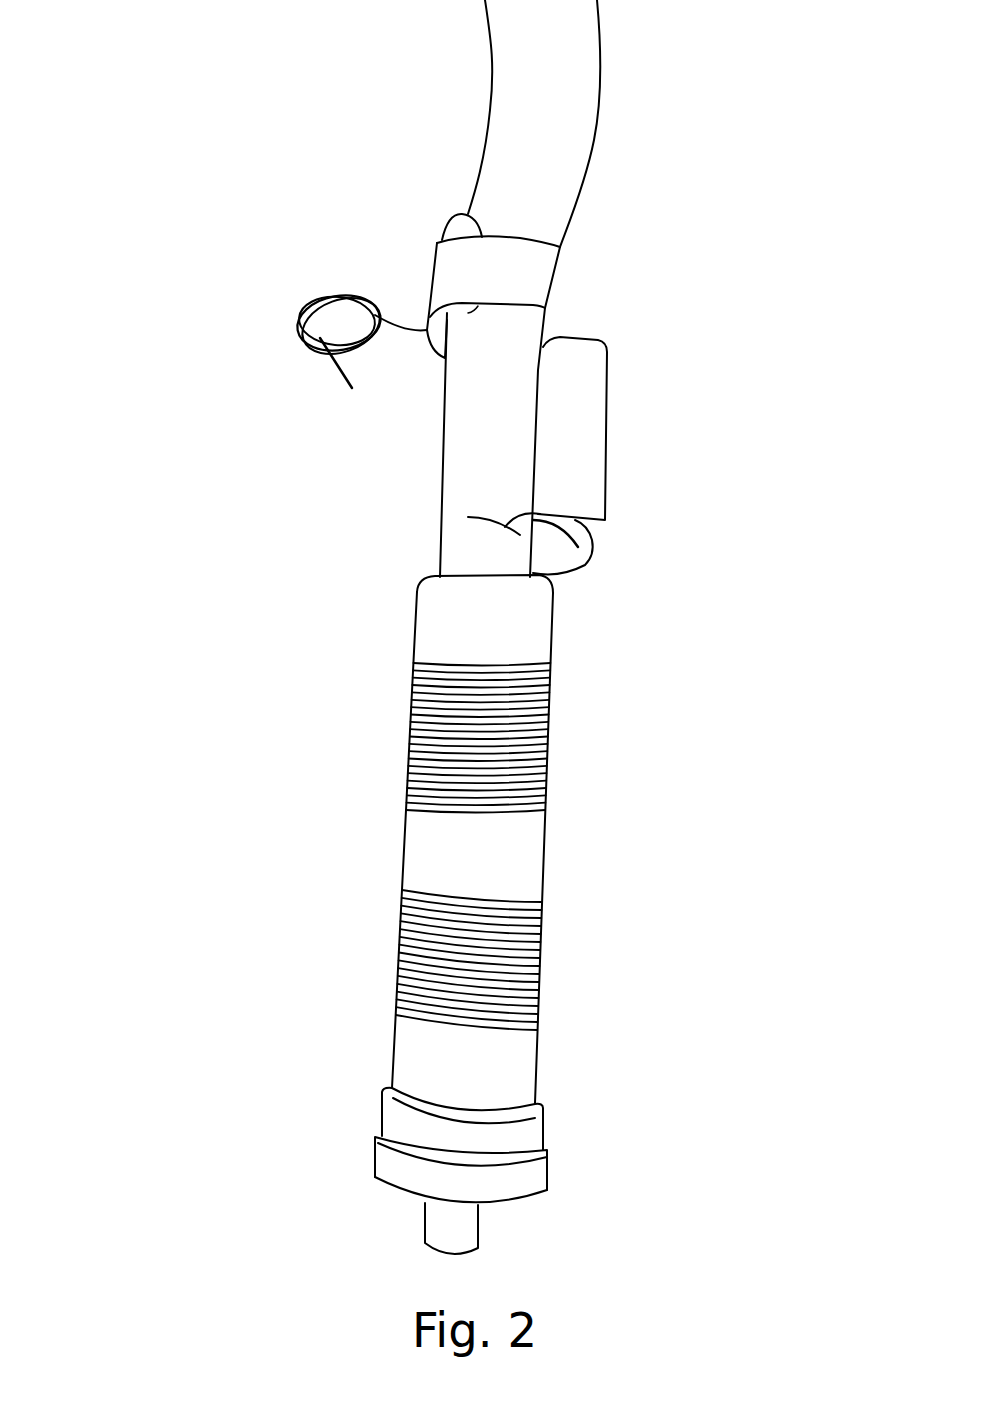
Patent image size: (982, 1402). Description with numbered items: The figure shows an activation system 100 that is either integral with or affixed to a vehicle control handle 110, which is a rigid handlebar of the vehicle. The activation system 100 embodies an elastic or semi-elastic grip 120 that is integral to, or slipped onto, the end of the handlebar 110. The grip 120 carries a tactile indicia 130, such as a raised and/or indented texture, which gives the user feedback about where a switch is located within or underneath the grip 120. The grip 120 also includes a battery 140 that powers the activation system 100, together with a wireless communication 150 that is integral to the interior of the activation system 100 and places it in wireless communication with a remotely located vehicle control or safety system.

The activation system 100 is at (227, 70).
The vehicle control handle 110 is at (598, 195).
The grip 120 is at (513, 862).
The tactile indicia 130 is at (392, 730).
The battery 140 is at (630, 488).
The wireless communication 150 is at (310, 362).